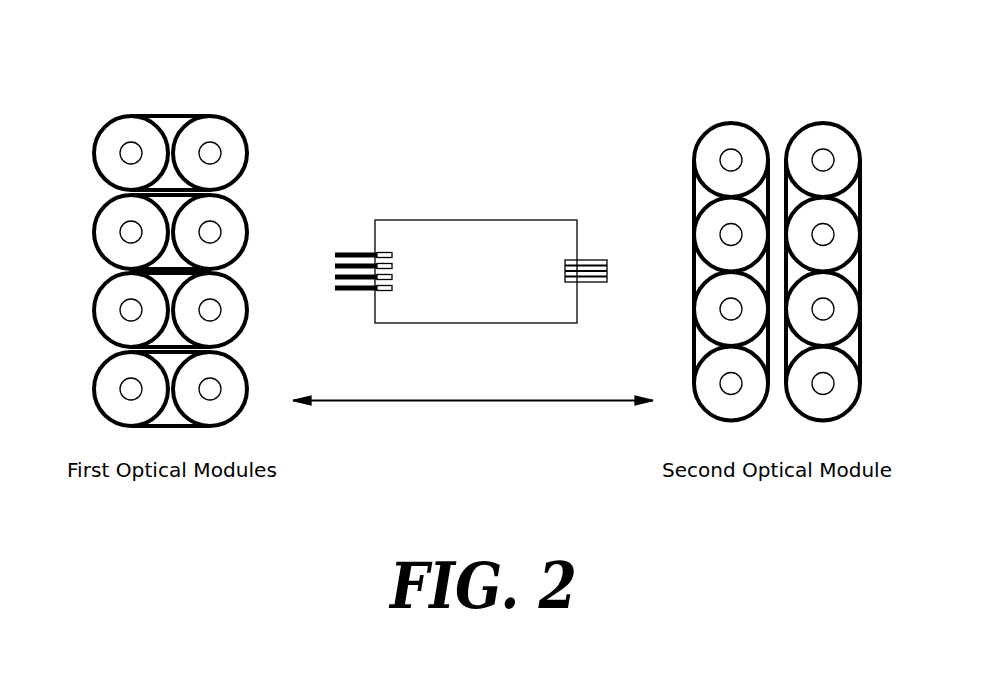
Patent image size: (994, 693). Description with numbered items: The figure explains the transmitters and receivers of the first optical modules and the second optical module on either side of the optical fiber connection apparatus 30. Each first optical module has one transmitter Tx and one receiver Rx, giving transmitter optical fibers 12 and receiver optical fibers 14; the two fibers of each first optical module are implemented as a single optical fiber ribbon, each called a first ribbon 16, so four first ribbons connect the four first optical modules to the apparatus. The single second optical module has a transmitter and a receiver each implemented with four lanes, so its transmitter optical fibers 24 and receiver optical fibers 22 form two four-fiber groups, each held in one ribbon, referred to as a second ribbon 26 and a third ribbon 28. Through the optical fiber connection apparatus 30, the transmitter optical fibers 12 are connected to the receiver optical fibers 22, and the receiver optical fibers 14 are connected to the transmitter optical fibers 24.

The transmitter optical fibers 12 is at (196, 241).
The receiver optical fibers 14 is at (93, 157).
The first ribbon 16 is at (170, 115).
The receiver optical fibers 22 is at (801, 240).
The transmitter optical fibers 24 is at (690, 130).
The second ribbon 26 is at (731, 122).
The third ribbon 28 is at (858, 415).
The optical fiber connection apparatus 30 is at (508, 220).